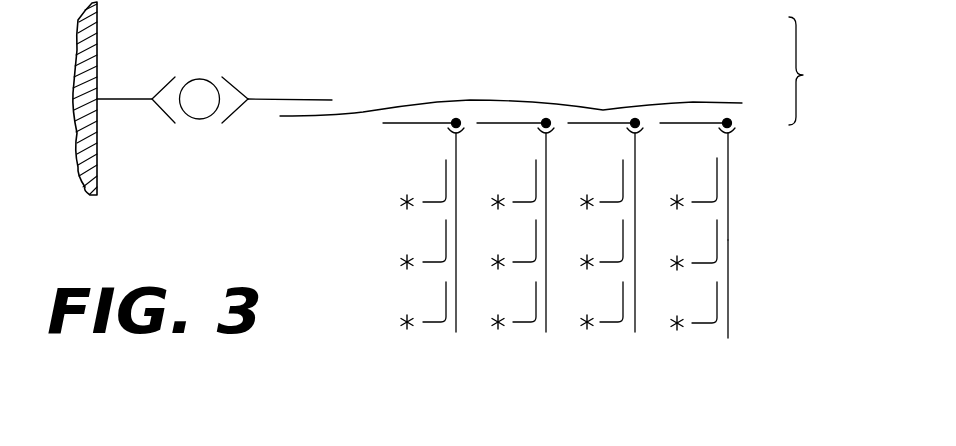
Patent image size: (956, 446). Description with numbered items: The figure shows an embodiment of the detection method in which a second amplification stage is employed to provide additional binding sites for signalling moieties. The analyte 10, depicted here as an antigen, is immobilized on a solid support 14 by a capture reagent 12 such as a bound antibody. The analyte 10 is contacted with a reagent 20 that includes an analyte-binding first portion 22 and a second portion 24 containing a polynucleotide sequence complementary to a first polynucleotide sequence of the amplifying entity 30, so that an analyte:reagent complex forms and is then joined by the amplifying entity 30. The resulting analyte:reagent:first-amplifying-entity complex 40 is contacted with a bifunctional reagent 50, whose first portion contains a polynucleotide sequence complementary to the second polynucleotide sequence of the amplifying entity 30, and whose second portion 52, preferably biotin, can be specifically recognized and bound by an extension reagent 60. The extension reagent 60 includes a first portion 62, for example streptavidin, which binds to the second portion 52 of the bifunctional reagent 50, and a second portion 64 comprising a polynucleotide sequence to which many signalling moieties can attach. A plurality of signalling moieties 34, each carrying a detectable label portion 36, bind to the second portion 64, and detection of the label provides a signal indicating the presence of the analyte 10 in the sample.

The analyte 10 is at (202, 72).
The capture reagent 12 is at (140, 95).
The solid support 14 is at (82, 177).
The reagent 20 is at (253, 110).
The analyte-binding first portion 22 is at (237, 80).
The second portion 24 is at (290, 100).
The amplifying entity 30 is at (550, 100).
The signalling moieties 34 is at (712, 335).
The detectable label portion 36 is at (670, 330).
The analyte:reagent:first-amplifying-entity complex 40 is at (803, 75).
The bifunctional reagent 50 is at (693, 132).
The second portion 52 is at (737, 122).
The extension reagent 60 is at (730, 202).
The first portion 62 is at (738, 133).
The second portion 64 is at (735, 245).